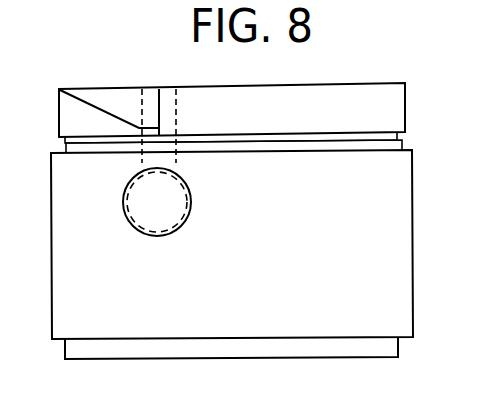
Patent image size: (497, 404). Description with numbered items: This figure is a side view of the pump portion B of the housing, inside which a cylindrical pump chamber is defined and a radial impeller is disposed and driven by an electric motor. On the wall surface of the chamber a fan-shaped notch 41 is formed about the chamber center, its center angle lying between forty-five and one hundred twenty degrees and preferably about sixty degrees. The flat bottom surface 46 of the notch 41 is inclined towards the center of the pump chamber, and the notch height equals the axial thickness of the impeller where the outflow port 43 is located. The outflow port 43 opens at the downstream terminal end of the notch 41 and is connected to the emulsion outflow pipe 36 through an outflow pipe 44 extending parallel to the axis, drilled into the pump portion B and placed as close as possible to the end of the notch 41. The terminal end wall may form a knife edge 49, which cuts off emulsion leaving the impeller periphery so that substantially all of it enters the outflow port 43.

The pump portion B is at (390, 243).
The notch 41 is at (105, 97).
The flat bottom surface 46 is at (90, 100).
The outflow port 43 is at (149, 100).
The knife edge 49 is at (176, 107).
The outflow pipe 44 is at (177, 168).
The emulsion outflow pipe 36 is at (182, 223).